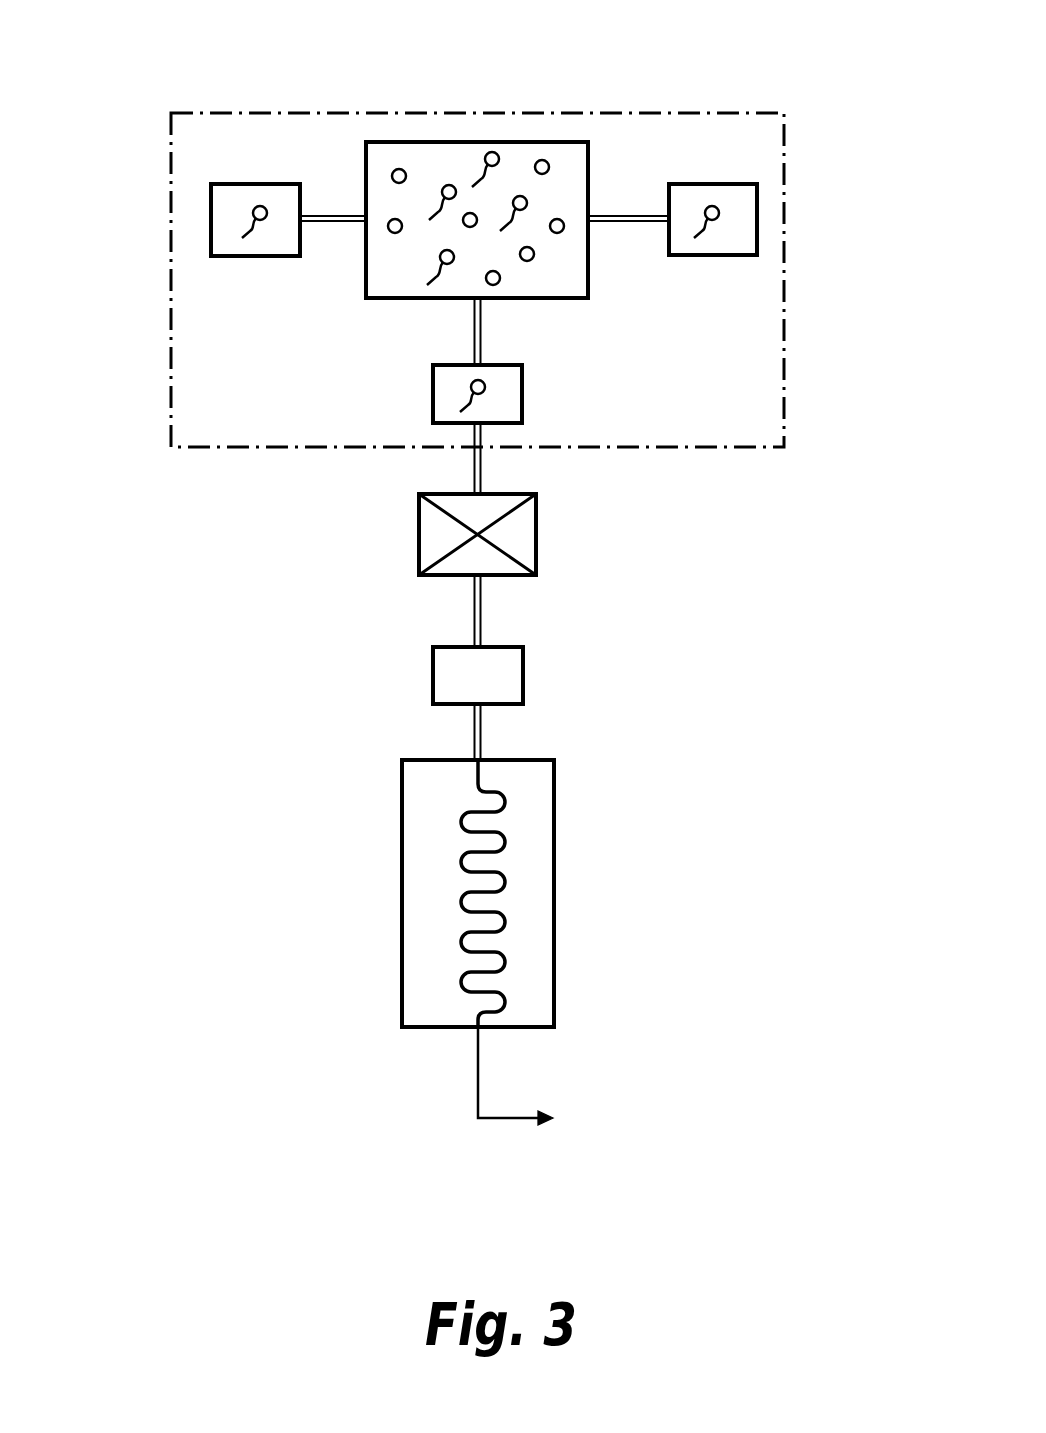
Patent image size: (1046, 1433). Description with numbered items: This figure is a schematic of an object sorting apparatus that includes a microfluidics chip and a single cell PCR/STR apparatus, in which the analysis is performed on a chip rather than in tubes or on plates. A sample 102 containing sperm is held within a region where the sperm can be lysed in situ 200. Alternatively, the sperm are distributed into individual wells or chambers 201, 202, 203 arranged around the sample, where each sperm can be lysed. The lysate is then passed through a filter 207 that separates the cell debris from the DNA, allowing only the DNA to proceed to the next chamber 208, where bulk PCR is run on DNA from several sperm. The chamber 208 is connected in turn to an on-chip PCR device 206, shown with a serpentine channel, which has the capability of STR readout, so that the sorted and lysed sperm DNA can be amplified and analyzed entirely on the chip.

The sample 102 is at (515, 160).
The in situ lysis region 200 is at (786, 353).
The well or chamber 201 is at (757, 221).
The well or chamber 202 is at (255, 206).
The well or chamber 203 is at (433, 397).
The on-chip PCR device 206 is at (402, 882).
The filter 207 is at (419, 527).
The chamber 208 is at (433, 681).